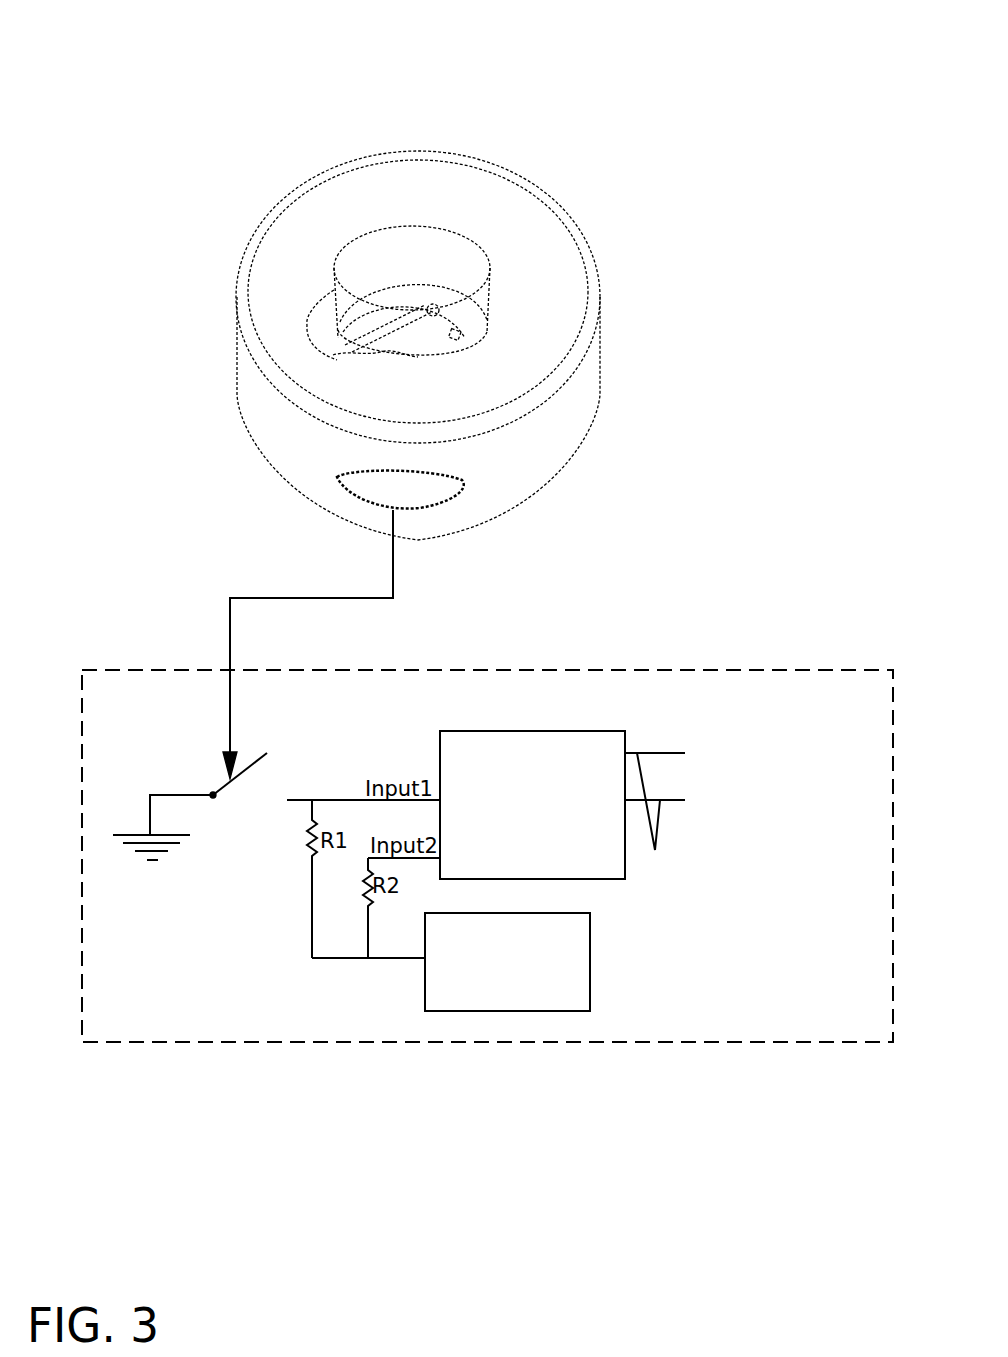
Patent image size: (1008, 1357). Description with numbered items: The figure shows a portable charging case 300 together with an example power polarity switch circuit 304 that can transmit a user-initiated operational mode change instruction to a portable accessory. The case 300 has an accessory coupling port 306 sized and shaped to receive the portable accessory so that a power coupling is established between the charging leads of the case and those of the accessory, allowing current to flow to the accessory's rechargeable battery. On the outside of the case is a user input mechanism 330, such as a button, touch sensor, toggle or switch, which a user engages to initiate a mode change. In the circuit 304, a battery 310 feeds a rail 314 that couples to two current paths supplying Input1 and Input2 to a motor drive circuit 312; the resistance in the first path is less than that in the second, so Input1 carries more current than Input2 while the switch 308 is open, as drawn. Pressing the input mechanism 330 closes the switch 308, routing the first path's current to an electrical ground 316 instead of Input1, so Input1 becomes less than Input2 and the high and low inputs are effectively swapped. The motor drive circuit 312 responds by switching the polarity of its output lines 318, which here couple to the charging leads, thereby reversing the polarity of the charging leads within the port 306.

The portable charging case 300 is at (160, 62).
The accessory coupling port 306 is at (423, 232).
The user input mechanism 330 is at (387, 487).
The power polarity switch circuit 304 is at (487, 856).
The switch 308 is at (253, 760).
The electrical ground 316 is at (150, 862).
The motor drive circuit 312 is at (532, 805).
The output lines 318 is at (655, 850).
The battery 310 is at (507, 962).
The rail 314 is at (353, 959).